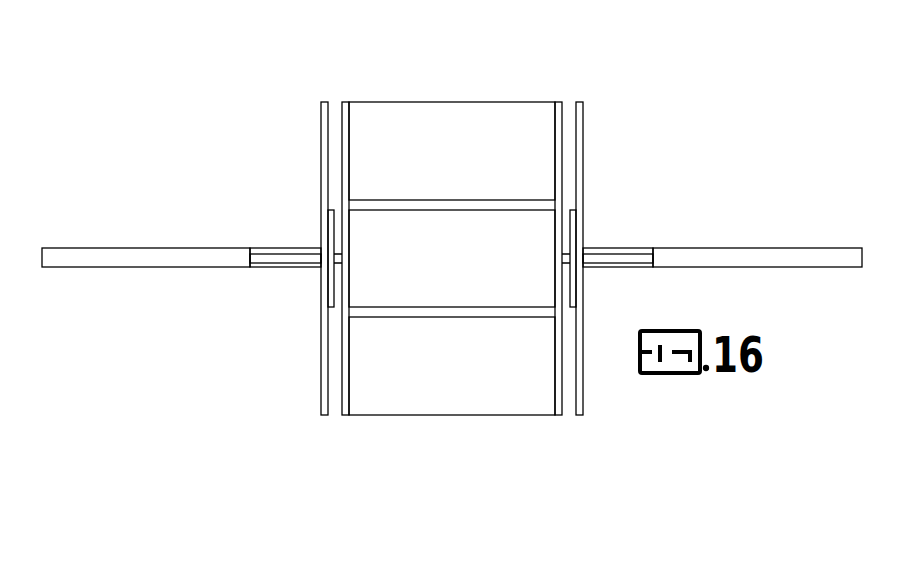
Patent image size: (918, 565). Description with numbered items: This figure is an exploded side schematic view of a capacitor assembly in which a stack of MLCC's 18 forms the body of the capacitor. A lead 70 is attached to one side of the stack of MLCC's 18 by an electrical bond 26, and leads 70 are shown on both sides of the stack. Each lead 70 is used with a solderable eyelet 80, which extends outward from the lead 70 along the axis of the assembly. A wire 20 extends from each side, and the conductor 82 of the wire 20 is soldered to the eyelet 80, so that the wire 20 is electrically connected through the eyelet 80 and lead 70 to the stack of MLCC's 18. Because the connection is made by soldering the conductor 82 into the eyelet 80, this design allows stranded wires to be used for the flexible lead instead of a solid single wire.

The stack of MLCC's 18 is at (423, 388).
The electrical bond 26 is at (560, 105).
The lead 70 is at (330, 185).
The wire 20 is at (143, 257).
The solderable eyelet 80 is at (248, 245).
The conductor 82 is at (292, 267).